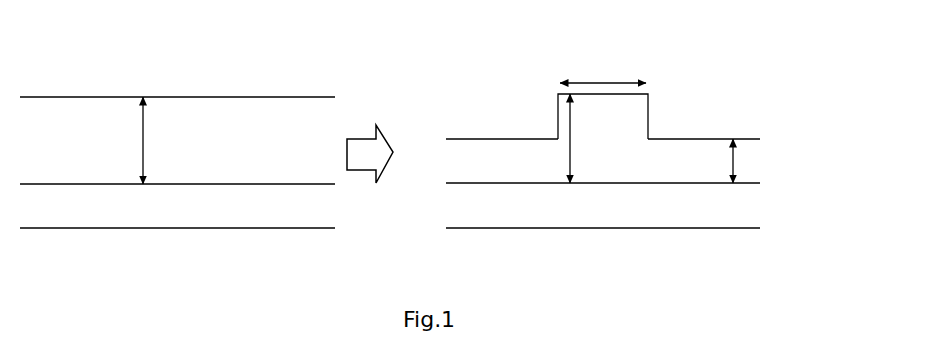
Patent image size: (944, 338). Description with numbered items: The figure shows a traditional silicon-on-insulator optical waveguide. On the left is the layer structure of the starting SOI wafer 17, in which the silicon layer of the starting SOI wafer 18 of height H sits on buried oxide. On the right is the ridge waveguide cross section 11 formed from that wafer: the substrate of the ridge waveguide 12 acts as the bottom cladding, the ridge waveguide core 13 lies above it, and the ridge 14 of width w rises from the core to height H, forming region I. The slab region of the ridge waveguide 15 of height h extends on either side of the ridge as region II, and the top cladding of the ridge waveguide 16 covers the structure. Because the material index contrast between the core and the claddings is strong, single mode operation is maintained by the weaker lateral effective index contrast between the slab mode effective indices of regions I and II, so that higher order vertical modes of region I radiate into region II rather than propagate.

The ridge waveguide cross section 11 is at (605, 151).
The substrate of the ridge waveguide 12 is at (569, 213).
The ridge waveguide core 13 is at (575, 153).
The ridge 14 is at (651, 115).
The slab region of the ridge waveguide 15 is at (709, 150).
The top cladding of the ridge waveguide 16 is at (690, 99).
The layer structure of the starting SOI wafer 17 is at (177, 156).
The silicon layer of the starting SOI wafer 18 is at (218, 112).